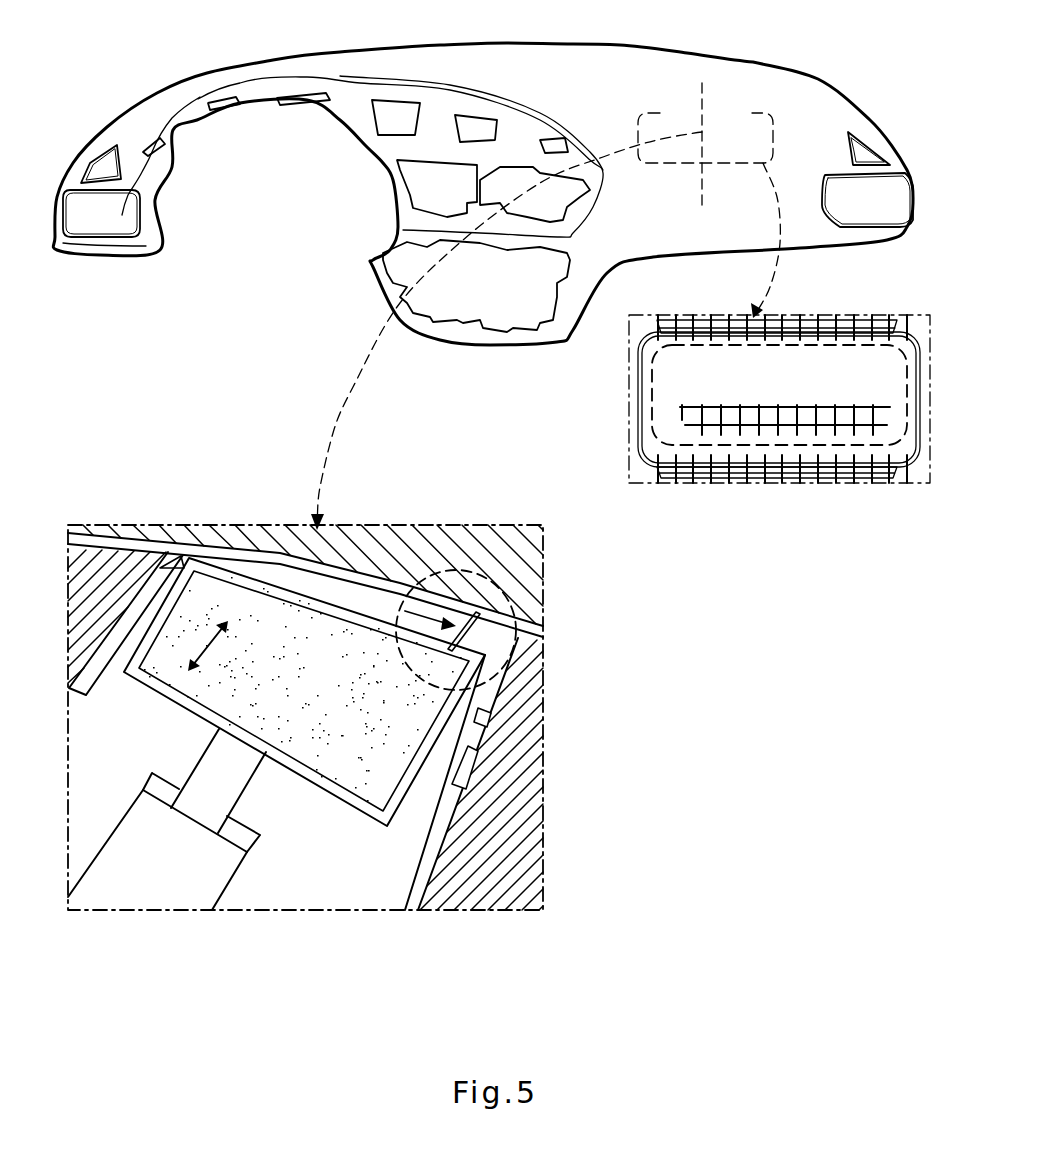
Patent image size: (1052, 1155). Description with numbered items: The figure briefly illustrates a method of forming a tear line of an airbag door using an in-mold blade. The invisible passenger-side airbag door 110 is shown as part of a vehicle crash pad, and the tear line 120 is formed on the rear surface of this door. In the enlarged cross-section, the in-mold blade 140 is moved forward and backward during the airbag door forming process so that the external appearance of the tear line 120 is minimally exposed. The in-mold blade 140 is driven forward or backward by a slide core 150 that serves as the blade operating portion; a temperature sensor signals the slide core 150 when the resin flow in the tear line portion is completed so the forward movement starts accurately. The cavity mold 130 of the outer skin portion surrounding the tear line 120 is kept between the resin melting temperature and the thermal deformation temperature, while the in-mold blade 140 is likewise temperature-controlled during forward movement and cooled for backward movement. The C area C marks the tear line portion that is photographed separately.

The invisible passenger-side airbag door 110 is at (375, 273).
The tear line 120 is at (767, 113).
The cavity mold 130 is at (423, 532).
The in-mold blade 140 is at (500, 648).
The slide core 150 is at (390, 788).
The C area C is at (458, 568).